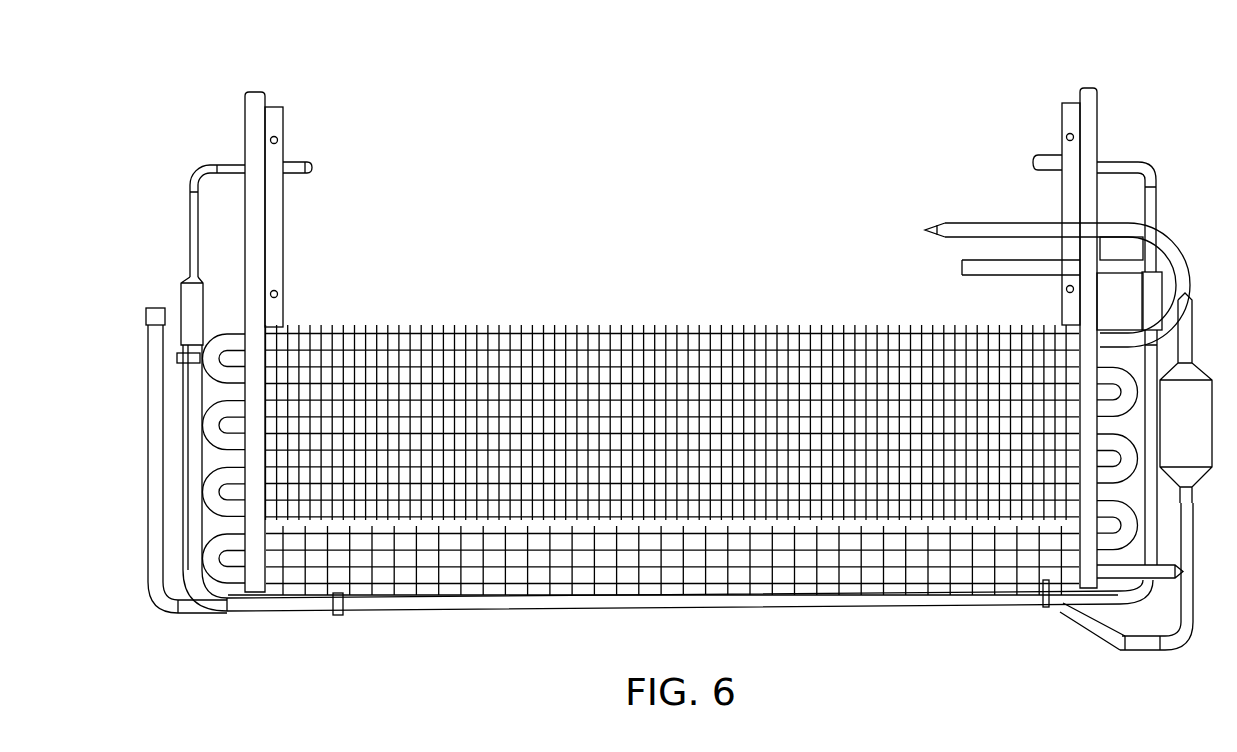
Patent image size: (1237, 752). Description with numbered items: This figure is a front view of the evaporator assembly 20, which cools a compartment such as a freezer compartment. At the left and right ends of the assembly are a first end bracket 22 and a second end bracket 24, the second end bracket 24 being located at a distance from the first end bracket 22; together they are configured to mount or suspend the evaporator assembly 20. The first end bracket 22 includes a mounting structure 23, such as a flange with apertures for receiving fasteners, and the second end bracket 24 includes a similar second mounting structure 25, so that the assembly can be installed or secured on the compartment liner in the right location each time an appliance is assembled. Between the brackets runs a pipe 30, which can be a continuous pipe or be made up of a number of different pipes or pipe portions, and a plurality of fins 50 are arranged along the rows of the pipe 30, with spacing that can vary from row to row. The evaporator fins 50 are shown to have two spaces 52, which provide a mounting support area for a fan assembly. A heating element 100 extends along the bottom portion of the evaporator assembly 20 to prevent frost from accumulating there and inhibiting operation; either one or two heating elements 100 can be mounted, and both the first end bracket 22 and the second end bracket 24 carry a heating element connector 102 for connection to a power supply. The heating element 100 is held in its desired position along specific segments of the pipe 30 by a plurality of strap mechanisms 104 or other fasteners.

The evaporator assembly 20 is at (125, 320).
The first end bracket 22 is at (250, 90).
The mounting structure 23 is at (284, 225).
The second end bracket 24 is at (1085, 88).
The second mounting structure 25 is at (1060, 200).
The pipe 30 is at (1170, 238).
The fins 50 is at (669, 412).
The spaces 52 is at (543, 317).
The heating element 100 is at (180, 176).
The heating element connector 102 is at (320, 160).
The strap mechanism 104 is at (195, 360).